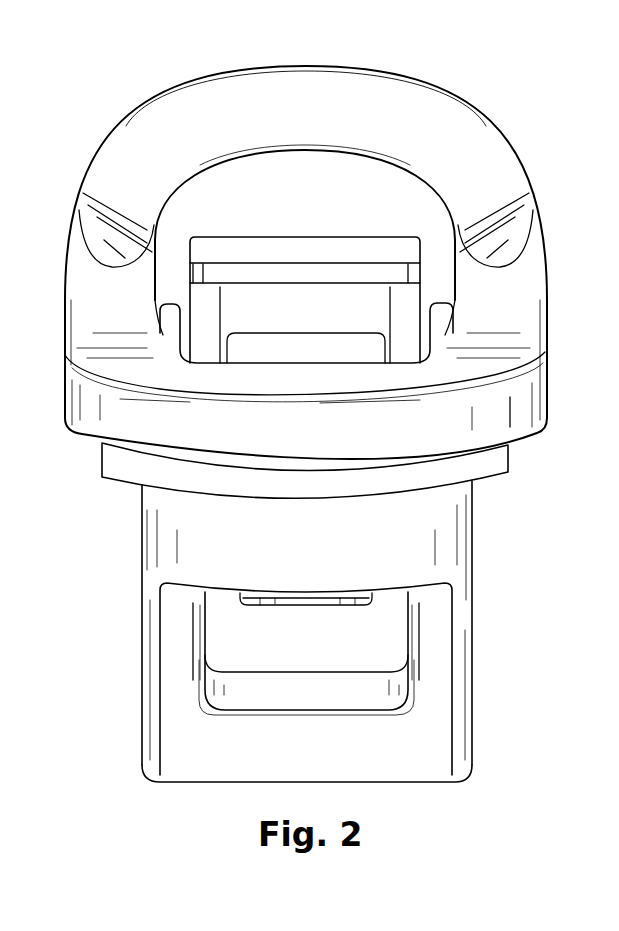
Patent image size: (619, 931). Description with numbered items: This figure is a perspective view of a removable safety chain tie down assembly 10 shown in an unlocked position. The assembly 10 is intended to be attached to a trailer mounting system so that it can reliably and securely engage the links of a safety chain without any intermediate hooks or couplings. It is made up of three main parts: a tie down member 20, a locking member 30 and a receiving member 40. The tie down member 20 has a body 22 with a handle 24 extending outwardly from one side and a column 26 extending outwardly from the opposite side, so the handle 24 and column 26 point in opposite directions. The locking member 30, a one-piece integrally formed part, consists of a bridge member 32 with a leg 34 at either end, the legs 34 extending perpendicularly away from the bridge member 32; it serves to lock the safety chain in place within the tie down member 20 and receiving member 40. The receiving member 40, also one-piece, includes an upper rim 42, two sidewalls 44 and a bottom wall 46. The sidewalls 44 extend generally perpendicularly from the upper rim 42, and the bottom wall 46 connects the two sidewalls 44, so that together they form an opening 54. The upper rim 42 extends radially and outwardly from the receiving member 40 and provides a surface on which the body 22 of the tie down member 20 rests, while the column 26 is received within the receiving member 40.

The safety chain tie down assembly 10 is at (455, 72).
The tie down member 20 is at (53, 330).
The body 22 is at (500, 403).
The handle 24 is at (240, 120).
The column 26 is at (303, 606).
The locking member 30 is at (235, 230).
The bridge member 32 is at (348, 245).
The leg 34 is at (405, 300).
The receiving member 40 is at (490, 543).
The upper rim 42 is at (475, 468).
The sidewall 44 is at (167, 622).
The bottom wall 46 is at (405, 780).
The opening 54 is at (360, 637).